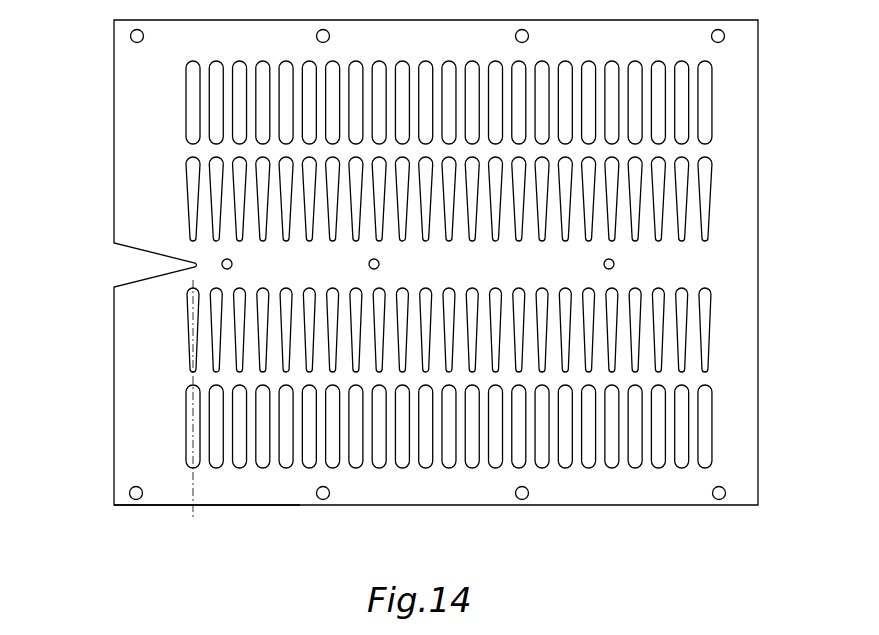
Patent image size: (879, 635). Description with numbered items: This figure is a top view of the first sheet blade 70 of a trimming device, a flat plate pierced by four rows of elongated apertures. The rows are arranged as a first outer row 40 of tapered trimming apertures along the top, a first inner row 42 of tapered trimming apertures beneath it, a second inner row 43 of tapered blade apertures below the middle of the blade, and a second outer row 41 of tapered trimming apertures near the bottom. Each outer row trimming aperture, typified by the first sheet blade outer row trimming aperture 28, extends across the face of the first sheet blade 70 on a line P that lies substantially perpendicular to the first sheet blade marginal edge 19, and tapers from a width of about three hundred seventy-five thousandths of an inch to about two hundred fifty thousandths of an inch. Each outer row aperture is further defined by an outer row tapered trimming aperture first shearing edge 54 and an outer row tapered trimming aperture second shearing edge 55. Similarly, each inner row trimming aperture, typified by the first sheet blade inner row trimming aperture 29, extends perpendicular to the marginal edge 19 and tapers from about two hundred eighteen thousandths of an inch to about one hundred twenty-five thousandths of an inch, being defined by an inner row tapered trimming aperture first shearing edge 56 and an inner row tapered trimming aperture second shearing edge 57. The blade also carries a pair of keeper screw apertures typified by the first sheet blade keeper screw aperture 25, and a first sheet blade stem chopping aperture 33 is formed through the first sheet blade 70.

The first sheet blade 70 is at (137, 110).
The first outer row of tapered trimming apertures 40 is at (727, 143).
The first inner row of tapered trimming apertures 42 is at (727, 243).
The second inner row of tapered blade apertures 43 is at (478, 332).
The second outer row of tapered trimming apertures 41 is at (476, 433).
The first sheet blade stem chopping aperture 33 is at (232, 264).
The first sheet blade keeper screw aperture 25 is at (604, 264).
The first sheet blade inner row trimming aperture 29 is at (161, 333).
The inner row tapered trimming aperture first shearing edge 56 is at (161, 333).
The inner row tapered trimming aperture second shearing edge 57 is at (161, 333).
The first sheet blade outer row trimming aperture 28 is at (163, 433).
The outer row tapered trimming aperture first shearing edge 54 is at (163, 433).
The outer row tapered trimming aperture second shearing edge 55 is at (200, 450).
The first sheet blade marginal edge 19 is at (180, 503).
The line P is at (193, 483).